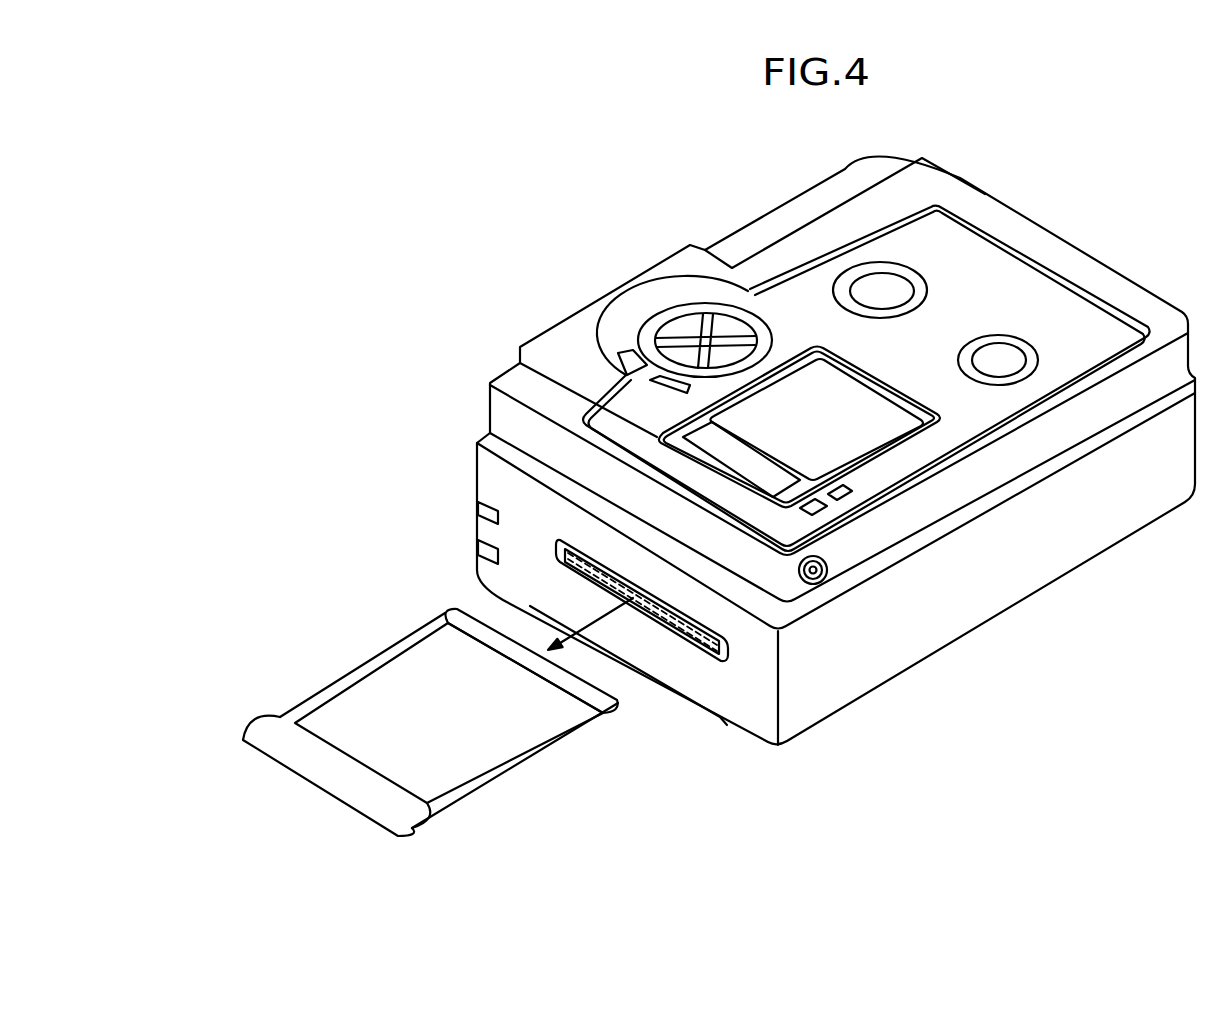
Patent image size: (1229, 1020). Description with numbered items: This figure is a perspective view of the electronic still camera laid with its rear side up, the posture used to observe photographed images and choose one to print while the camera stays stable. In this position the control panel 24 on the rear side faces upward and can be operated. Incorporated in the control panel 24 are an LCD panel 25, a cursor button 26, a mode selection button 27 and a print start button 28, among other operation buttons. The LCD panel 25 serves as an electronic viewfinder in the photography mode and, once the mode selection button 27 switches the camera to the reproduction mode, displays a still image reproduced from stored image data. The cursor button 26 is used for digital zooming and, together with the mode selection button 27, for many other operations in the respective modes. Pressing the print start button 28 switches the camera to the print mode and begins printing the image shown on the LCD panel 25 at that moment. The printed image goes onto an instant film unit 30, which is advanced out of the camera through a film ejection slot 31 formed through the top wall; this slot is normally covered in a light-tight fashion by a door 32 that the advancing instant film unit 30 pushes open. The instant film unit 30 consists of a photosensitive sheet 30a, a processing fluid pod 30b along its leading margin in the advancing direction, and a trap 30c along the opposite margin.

The control panel 24 is at (1033, 267).
The LCD panel 25 is at (850, 393).
The cursor button 26 is at (668, 322).
The mode selection button 27 is at (895, 282).
The print start button 28 is at (1013, 355).
The instant film unit 30 is at (415, 684).
The photosensitive sheet 30a is at (460, 718).
The processing fluid pod 30b is at (303, 767).
The trap 30c is at (473, 620).
The film ejection slot 31 is at (700, 648).
The door 32 is at (730, 652).